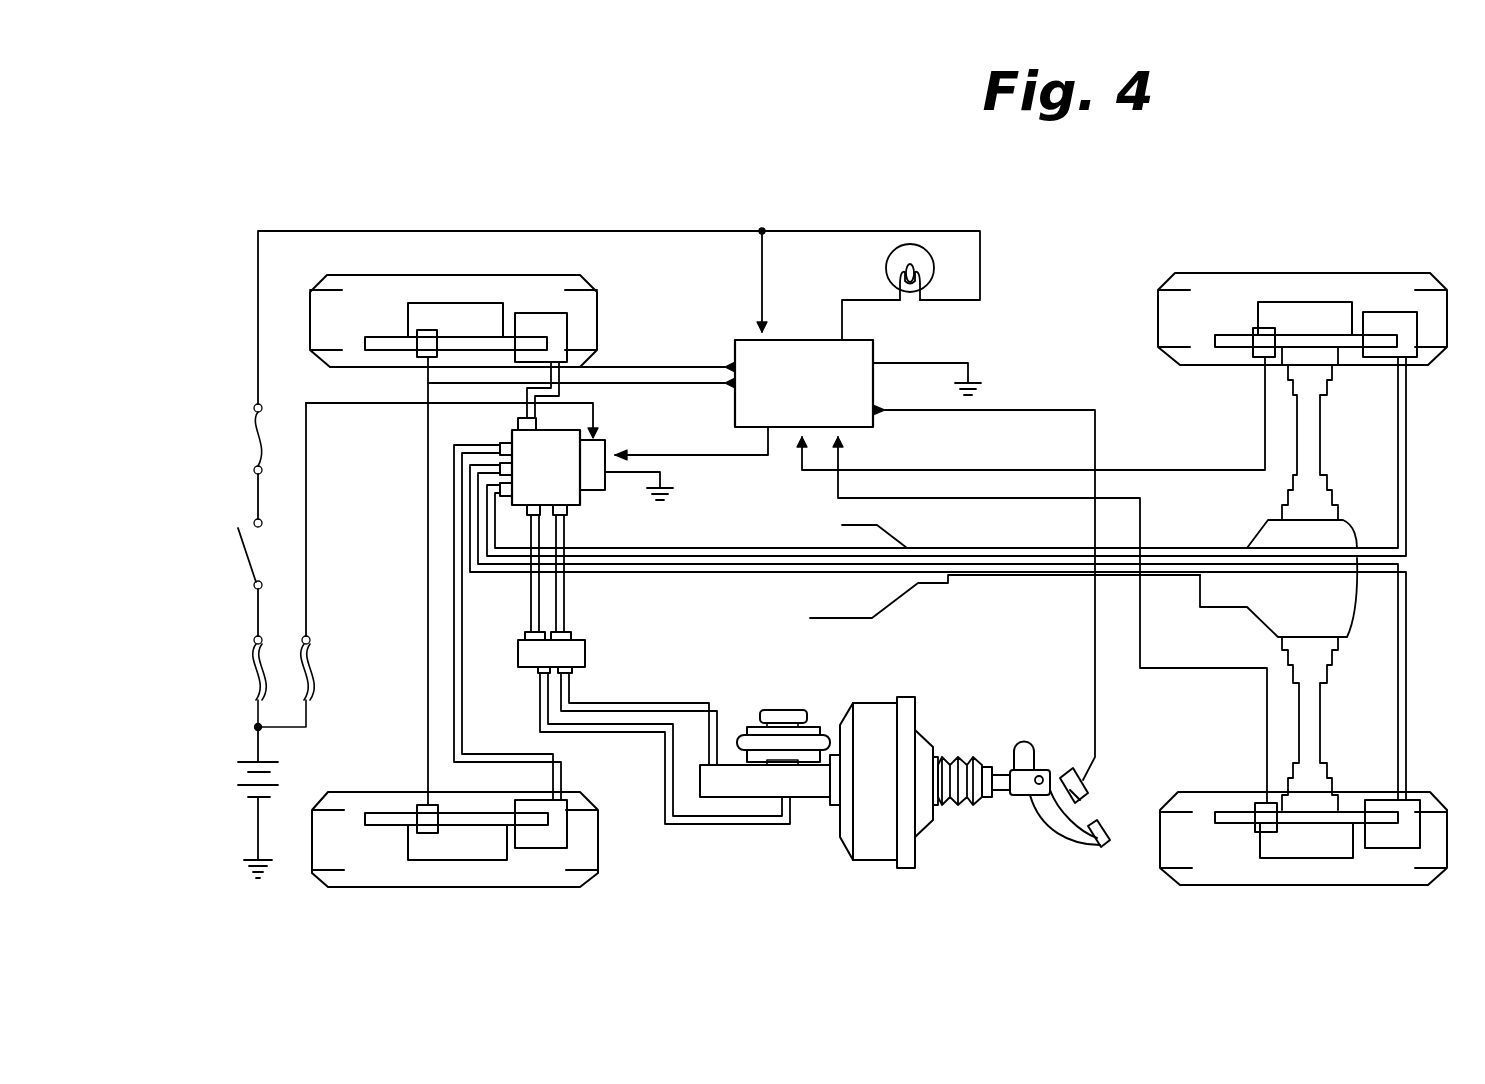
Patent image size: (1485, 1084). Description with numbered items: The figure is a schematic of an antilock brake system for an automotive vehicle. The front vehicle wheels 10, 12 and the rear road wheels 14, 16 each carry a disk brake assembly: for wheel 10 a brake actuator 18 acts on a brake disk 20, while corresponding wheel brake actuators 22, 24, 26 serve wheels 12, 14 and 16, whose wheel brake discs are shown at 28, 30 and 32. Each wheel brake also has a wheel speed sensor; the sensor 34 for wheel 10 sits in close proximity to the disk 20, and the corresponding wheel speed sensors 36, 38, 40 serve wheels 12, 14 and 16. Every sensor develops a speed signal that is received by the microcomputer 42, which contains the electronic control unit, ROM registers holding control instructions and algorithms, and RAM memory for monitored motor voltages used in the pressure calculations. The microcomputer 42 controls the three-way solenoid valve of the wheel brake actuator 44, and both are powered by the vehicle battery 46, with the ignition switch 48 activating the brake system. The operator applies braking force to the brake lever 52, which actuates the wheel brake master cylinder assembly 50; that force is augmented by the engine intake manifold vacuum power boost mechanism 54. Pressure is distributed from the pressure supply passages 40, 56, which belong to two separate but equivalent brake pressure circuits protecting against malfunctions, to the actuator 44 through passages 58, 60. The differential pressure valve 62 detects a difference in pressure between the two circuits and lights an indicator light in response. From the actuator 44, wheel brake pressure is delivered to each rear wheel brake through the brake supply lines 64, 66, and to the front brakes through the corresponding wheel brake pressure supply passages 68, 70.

The front vehicle wheel 10 is at (457, 302).
The front vehicle wheel 12 is at (553, 870).
The rear vehicle road wheel 14 is at (1205, 296).
The rear vehicle road wheel 16 is at (1287, 868).
The brake actuator 18 is at (527, 314).
The brake disk 20 is at (383, 337).
The wheel brake actuator 22 is at (525, 845).
The wheel brake actuator 24 is at (1378, 318).
The wheel brake actuator 26 is at (1415, 845).
The wheel brake disc 28 is at (376, 820).
The wheel brake disc 30 is at (1287, 333).
The wheel brake disc 32 is at (1236, 825).
The wheel speed sensor 34 is at (421, 358).
The wheel speed sensor 36 is at (426, 835).
The wheel speed sensor 38 is at (1262, 352).
The wheel speed sensor / pressure supply passage 40 is at (1265, 803).
The microcomputer (electronic control unit) 42 is at (800, 340).
The wheel brake actuator 44 is at (572, 490).
The vehicle battery 46 is at (239, 798).
The ignition switch 48 is at (262, 585).
The wheel brake master cylinder assembly 50 is at (733, 766).
The brake lever 52 is at (1048, 832).
The vacuum power boost mechanism 54 is at (877, 708).
The pressure supply passage 56 is at (593, 730).
The passage 58 is at (566, 600).
The passage 60 is at (533, 617).
The differential pressure valve 62 is at (537, 655).
The brake supply line 64 is at (1407, 447).
The brake supply line 66 is at (1408, 620).
The wheel brake pressure supply passage 68 is at (525, 398).
The wheel brake pressure supply passage 70 is at (452, 618).